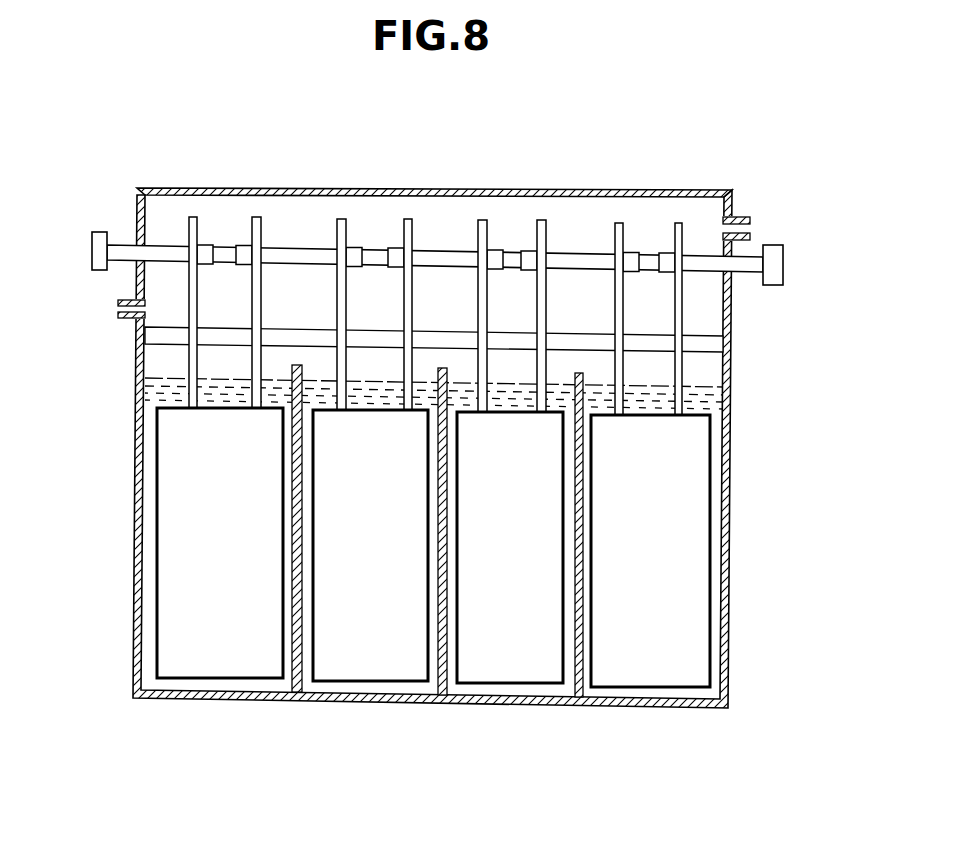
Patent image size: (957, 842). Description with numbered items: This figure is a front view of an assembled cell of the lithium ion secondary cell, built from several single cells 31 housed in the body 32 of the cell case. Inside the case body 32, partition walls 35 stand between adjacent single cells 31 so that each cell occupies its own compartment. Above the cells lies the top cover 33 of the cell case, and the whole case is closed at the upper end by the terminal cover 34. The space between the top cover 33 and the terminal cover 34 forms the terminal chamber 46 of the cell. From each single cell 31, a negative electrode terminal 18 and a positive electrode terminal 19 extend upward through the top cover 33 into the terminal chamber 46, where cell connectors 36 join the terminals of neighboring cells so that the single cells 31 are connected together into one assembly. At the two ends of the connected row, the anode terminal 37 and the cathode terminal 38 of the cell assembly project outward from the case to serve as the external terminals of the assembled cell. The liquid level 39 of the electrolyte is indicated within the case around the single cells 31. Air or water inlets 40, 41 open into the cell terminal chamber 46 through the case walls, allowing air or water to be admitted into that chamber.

The negative electrode terminals 18 is at (194, 217).
The positive electrode terminals 19 is at (257, 217).
The single cells 31 is at (175, 607).
The body of the cell case 32 is at (138, 445).
The top cover of the cell case 33 is at (712, 344).
The terminal cover of the cell case 34 is at (177, 188).
The partition walls 35 is at (290, 686).
The cell connectors 36 is at (302, 247).
The anode terminal of the cell assembly 37 is at (100, 256).
The cathode terminal of the cell assembly 38 is at (775, 265).
The liquid level of the electrolyte 39 is at (640, 383).
The air or water inlet 40 is at (118, 307).
The air or water inlet 41 is at (750, 229).
The terminal chamber 46 is at (705, 305).